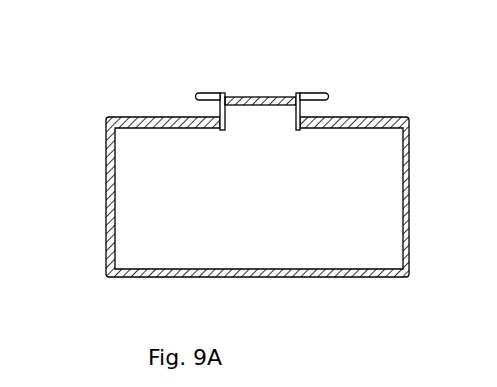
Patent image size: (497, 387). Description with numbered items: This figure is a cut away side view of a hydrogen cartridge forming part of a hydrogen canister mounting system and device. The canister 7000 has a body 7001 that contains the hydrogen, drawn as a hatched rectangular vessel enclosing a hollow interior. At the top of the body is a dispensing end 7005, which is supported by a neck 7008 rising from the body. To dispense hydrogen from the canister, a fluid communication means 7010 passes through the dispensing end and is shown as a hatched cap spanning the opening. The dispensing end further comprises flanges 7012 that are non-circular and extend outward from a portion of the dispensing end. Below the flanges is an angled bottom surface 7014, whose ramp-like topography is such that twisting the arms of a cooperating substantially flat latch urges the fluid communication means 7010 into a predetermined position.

The canister 7000 is at (82, 98).
The body 7001 is at (259, 198).
The dispensing end 7005 is at (212, 83).
The neck 7008 is at (300, 113).
The fluid communication means 7010 is at (264, 93).
The flanges 7012 is at (315, 87).
The angled bottom surface 7014 is at (213, 103).